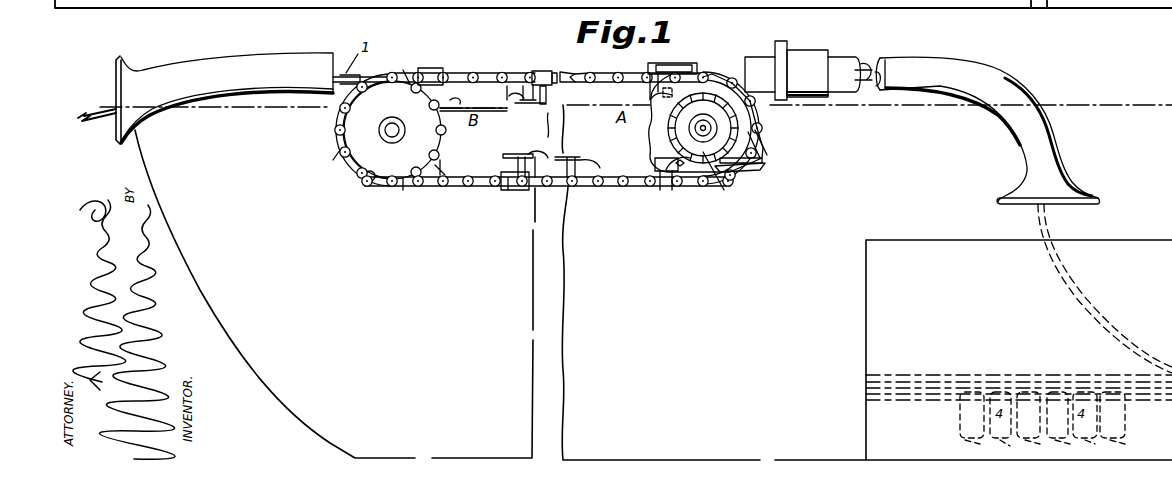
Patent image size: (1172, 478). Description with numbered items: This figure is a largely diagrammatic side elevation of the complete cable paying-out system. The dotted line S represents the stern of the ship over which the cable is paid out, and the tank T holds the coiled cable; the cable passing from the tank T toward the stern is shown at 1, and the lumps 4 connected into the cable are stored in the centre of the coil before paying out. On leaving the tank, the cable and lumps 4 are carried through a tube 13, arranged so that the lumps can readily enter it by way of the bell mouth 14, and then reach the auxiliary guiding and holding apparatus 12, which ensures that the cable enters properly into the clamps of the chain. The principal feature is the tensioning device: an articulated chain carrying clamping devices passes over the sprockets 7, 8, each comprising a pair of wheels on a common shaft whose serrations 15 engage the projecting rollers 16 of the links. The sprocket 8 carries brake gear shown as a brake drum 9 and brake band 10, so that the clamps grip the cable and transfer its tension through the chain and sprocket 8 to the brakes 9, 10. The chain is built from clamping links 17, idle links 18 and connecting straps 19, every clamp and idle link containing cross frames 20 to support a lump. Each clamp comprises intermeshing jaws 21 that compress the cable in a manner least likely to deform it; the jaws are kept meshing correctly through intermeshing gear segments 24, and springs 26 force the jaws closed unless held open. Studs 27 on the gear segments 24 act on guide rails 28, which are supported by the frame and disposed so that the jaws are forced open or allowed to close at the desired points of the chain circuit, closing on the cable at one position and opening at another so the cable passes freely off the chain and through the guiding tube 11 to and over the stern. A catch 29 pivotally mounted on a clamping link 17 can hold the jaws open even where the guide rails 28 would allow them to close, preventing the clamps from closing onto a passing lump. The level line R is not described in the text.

The cable 1 is at (1050, 220).
The lumps 4 is at (690, 62).
The sprocket 7 is at (407, 134).
The sprocket 8 is at (655, 137).
The brake drum 9 is at (716, 179).
The brake band 10 is at (742, 129).
The tube 11 is at (310, 58).
The auxiliary guiding and holding apparatus 12 is at (808, 56).
The tube 13 is at (965, 66).
The bell mouth 14 is at (1100, 201).
The serrations or sprockets 15 is at (655, 165).
The projecting rollers 16 is at (486, 74).
The clamping links 17 is at (410, 68).
The idle links 18 is at (480, 192).
The connecting straps or links 19 is at (455, 76).
The cross frames 20 is at (444, 172).
The intermeshing jaws 21 is at (432, 70).
The intermeshing gear segments 24 is at (545, 105).
The springs 26 is at (522, 74).
The studs 27 is at (508, 154).
The guide rails 28 is at (450, 108).
The catch 29 is at (326, 162).
The stern of a ship S is at (176, 229).
The tank T is at (878, 262).
The liquid level R is at (898, 381).